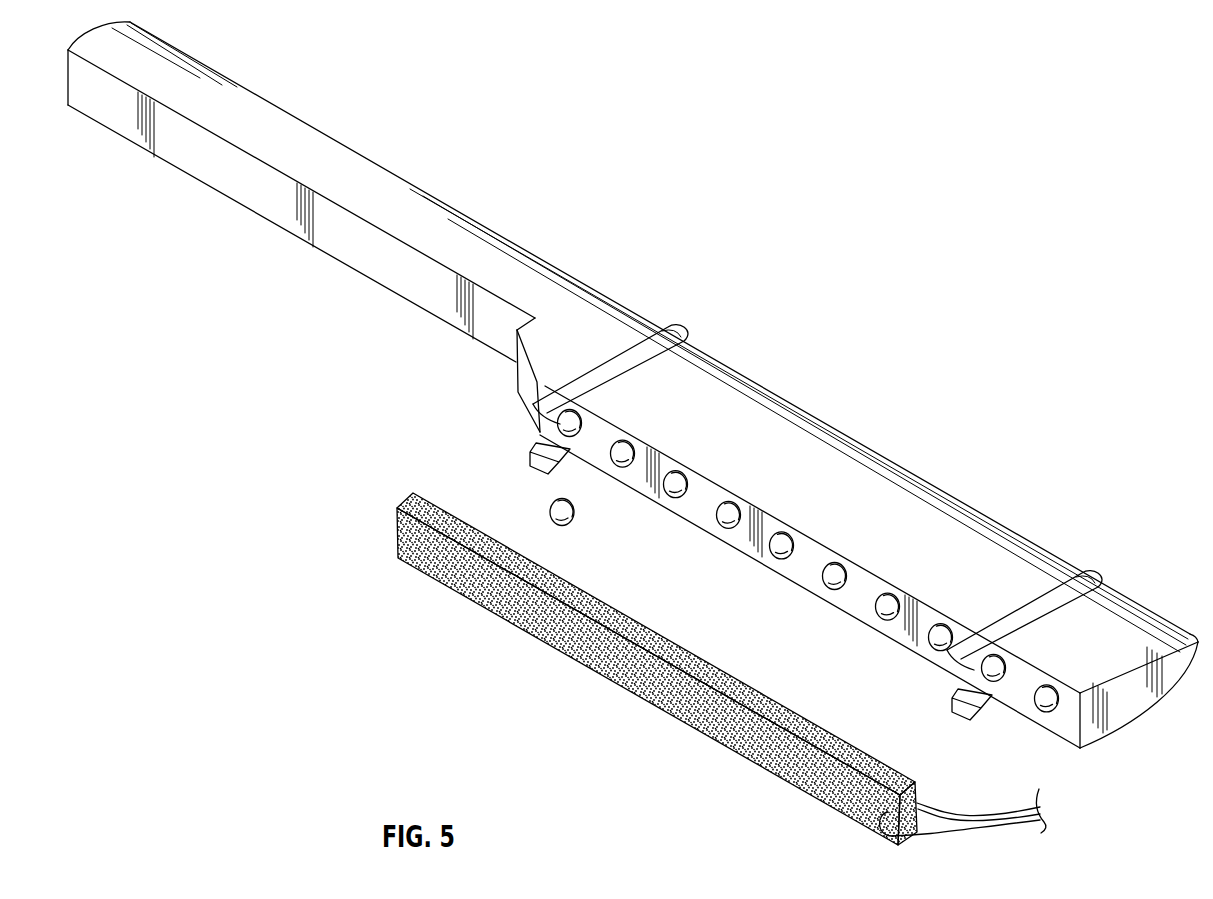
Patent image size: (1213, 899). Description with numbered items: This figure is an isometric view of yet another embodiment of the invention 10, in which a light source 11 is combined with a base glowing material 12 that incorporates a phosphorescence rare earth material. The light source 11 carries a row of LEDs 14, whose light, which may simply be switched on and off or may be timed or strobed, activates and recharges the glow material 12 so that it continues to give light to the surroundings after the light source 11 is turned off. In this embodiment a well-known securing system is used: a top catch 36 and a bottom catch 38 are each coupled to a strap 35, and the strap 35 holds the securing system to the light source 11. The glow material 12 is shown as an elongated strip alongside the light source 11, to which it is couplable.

The invention 10 is at (869, 398).
The light source 11 is at (888, 502).
The base glowing material 12 is at (421, 630).
The LEDs 14 is at (783, 545).
The strap 35 is at (653, 327).
The top catch 36 is at (532, 452).
The bottom catch 38 is at (518, 398).